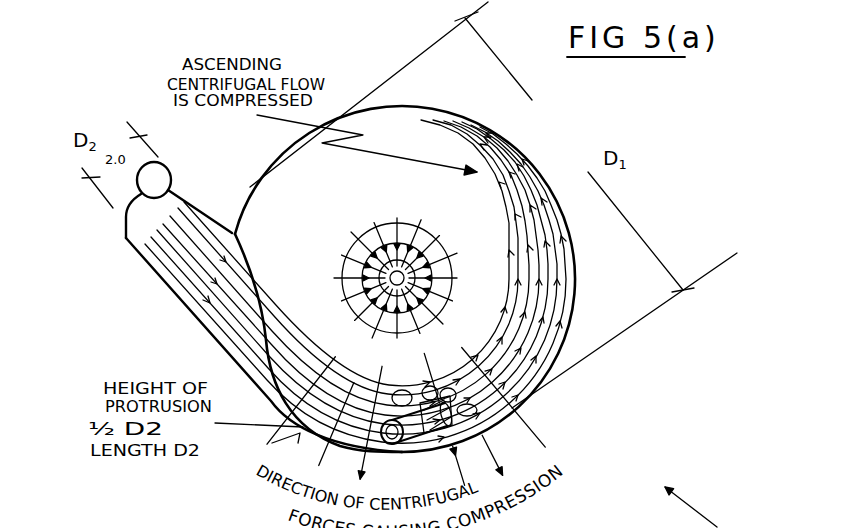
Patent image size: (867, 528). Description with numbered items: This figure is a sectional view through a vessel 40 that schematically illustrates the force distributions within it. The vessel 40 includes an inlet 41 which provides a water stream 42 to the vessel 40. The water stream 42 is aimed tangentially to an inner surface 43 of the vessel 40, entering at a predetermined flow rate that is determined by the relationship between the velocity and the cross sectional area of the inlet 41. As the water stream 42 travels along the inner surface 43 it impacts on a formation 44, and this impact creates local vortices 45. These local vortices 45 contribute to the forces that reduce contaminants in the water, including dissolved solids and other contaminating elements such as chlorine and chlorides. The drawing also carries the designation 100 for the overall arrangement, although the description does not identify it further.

The vessel 40 is at (580, 204).
The inlet 41 is at (133, 234).
The water stream 42 is at (218, 304).
The inner surface 43 is at (478, 436).
The formation 44 is at (507, 410).
The local vortices 45 is at (497, 392).
The vortex flow device 100 is at (447, 233).